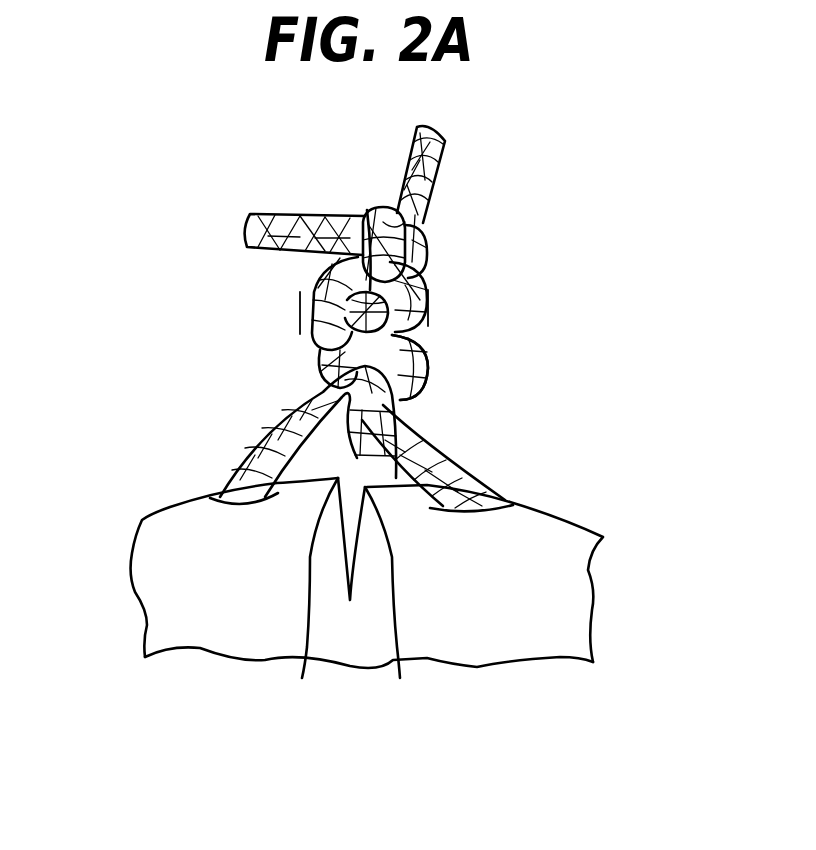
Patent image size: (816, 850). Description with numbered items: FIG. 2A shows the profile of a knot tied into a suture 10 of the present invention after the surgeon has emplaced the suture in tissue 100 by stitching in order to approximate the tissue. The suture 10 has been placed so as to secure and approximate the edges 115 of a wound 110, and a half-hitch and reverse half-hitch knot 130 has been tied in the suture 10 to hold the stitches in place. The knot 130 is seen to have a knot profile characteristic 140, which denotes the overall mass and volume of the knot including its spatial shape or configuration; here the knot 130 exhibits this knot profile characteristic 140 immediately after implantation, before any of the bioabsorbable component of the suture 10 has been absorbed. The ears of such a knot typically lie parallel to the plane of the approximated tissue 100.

The suture 10 is at (489, 205).
The tissue 100 is at (158, 530).
The wound 110 is at (420, 438).
The edges 115 is at (355, 603).
The knot 130 is at (433, 377).
The knot profile characteristic 140 is at (299, 312).